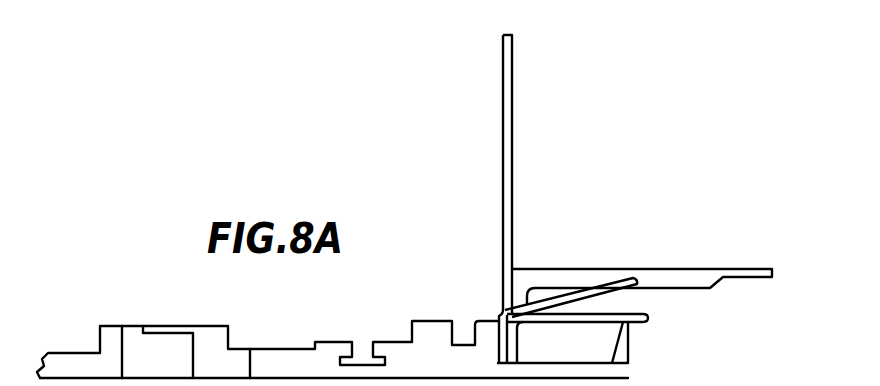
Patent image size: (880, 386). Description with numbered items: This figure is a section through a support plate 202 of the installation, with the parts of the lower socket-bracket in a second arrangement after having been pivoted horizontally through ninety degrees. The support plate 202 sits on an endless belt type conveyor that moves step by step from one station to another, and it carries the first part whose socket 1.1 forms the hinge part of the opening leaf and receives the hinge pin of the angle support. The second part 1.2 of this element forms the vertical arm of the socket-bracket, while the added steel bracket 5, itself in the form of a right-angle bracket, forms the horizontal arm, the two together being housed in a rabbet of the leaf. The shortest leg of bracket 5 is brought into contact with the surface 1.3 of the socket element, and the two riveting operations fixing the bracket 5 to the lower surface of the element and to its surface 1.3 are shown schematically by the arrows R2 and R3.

The support plate 202 is at (195, 325).
The steel bracket 5 is at (512, 135).
The socket 1.1 is at (602, 348).
The second part 1.2 is at (658, 268).
The surface 1.3 is at (627, 314).
The riveting operation arrow R2 is at (546, 249).
The riveting operation arrow R3 is at (597, 249).